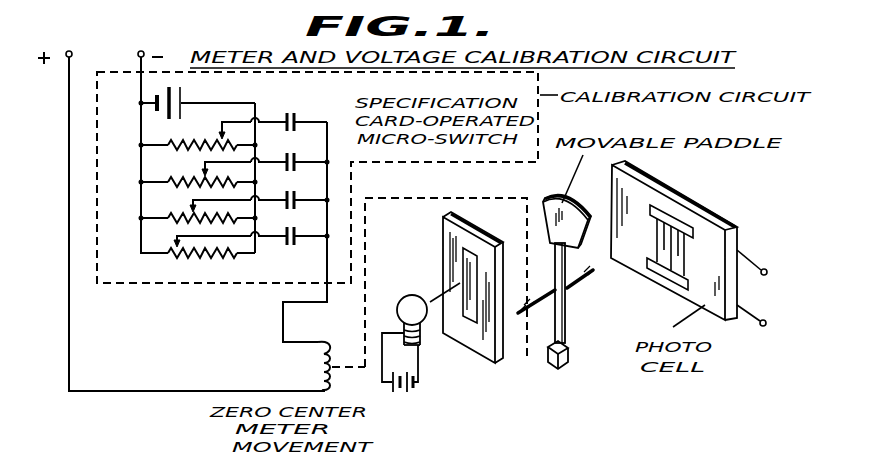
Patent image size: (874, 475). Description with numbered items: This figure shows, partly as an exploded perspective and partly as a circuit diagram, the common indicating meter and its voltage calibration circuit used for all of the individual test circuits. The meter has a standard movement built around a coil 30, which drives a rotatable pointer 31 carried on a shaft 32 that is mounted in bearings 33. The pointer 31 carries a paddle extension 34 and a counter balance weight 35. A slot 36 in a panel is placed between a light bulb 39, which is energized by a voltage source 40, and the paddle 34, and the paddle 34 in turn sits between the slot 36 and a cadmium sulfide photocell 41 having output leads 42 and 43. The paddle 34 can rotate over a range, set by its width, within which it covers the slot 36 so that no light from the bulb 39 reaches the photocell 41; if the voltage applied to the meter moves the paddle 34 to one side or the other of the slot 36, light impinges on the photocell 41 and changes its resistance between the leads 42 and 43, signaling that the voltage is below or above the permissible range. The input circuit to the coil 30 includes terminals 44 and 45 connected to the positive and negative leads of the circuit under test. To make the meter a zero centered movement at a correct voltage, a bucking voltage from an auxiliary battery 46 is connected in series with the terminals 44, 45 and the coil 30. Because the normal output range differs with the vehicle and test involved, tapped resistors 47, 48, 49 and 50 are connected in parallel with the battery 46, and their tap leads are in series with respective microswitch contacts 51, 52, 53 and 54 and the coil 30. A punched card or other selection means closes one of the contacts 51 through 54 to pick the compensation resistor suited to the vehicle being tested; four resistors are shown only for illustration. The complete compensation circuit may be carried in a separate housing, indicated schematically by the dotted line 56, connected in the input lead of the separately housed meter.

The coil 30 is at (347, 329).
The rotatable pointer 31 is at (567, 329).
The shaft 32 is at (573, 290).
The bearings 33 is at (535, 322).
The paddle extension 34 is at (583, 212).
The counter balance weight 35 is at (552, 368).
The slot 36 is at (467, 262).
The light bulb 39 is at (422, 296).
The voltage source 40 is at (400, 393).
The photocell 41 is at (703, 209).
The output lead 42 is at (768, 272).
The output lead 43 is at (767, 323).
The terminal 44 is at (81, 37).
The terminal 45 is at (155, 37).
The auxiliary battery 46 is at (186, 99).
The tapped resistor 47 is at (209, 132).
The tapped resistor 48 is at (197, 180).
The tapped resistor 49 is at (184, 214).
The tapped resistor 50 is at (208, 255).
The microswitch contact 51 is at (309, 109).
The microswitch contact 52 is at (310, 149).
The microswitch contact 53 is at (310, 188).
The microswitch contact 54 is at (298, 233).
The dotted line 56 is at (145, 285).